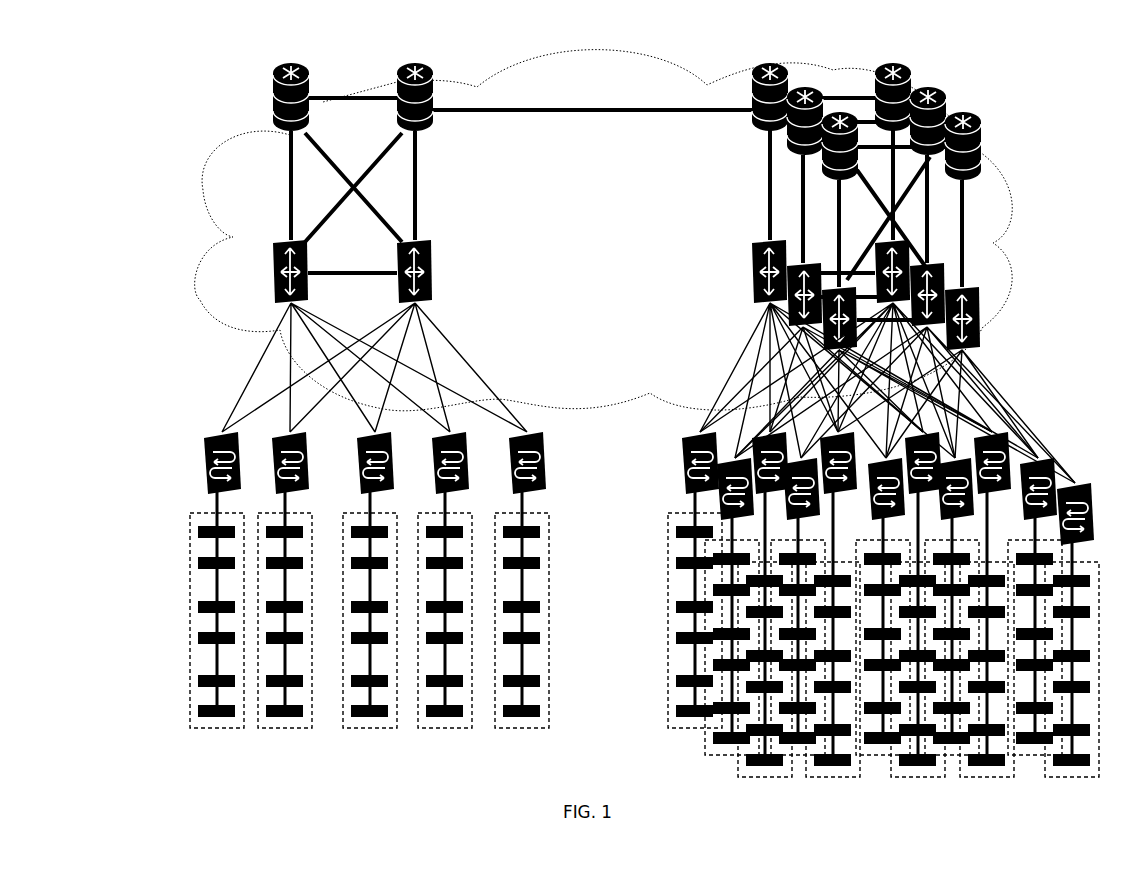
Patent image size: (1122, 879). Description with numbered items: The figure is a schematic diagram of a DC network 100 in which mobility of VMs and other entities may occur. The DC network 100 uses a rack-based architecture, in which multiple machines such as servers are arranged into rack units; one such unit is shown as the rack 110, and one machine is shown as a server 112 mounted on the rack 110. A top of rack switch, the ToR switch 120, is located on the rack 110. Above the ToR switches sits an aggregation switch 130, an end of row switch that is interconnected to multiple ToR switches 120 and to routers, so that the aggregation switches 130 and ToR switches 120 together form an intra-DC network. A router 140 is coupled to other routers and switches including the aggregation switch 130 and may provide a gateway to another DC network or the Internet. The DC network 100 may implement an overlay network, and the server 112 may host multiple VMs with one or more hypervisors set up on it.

The DC network 100 is at (126, 79).
The rack 110 is at (200, 730).
The server 112 is at (202, 538).
The ToR switch 120 is at (202, 465).
The aggregation switch 130 is at (275, 263).
The router 140 is at (305, 65).